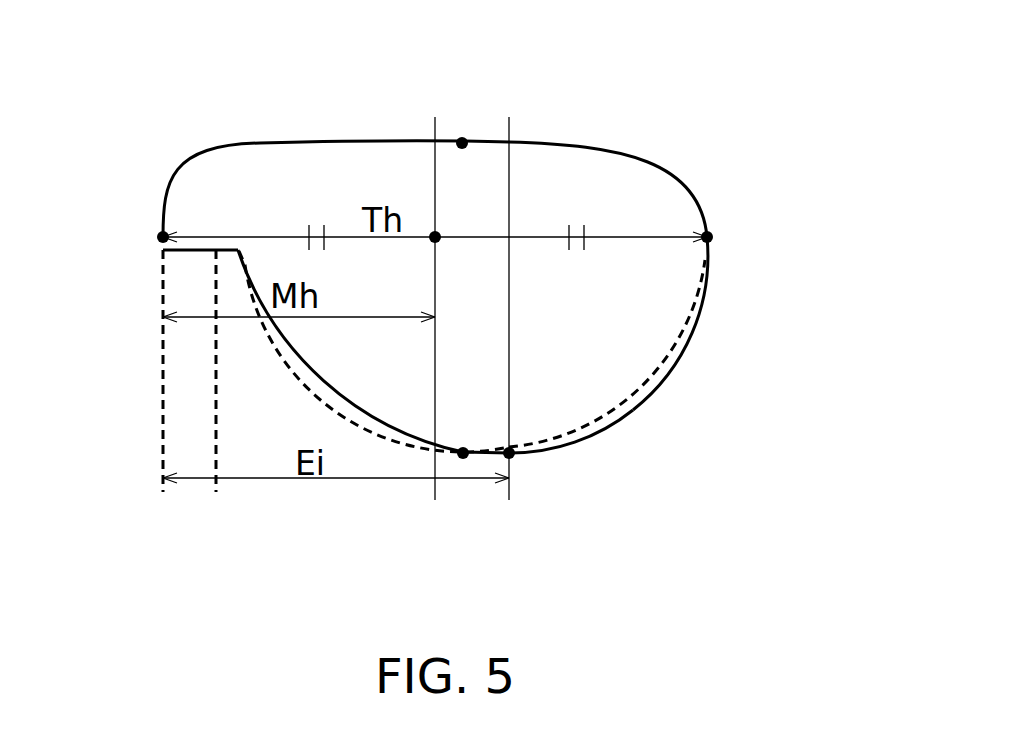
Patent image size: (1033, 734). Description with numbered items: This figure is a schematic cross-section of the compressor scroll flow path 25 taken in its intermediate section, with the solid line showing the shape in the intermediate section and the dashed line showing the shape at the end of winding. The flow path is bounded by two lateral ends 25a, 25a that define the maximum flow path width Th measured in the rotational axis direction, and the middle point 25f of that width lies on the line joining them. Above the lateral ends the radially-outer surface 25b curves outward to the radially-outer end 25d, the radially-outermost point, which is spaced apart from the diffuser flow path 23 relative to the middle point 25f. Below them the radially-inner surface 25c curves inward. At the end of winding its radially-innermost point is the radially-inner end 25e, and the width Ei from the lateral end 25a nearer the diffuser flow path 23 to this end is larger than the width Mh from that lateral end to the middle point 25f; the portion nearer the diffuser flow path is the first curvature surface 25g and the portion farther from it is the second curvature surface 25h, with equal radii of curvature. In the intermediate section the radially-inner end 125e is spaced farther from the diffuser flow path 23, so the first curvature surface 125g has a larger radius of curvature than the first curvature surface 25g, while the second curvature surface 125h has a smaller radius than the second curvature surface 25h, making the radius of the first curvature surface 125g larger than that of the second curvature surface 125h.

The diffuser flow path 23 is at (166, 372).
The compressor scroll flow path 25 is at (435, 261).
The lateral ends 25a is at (163, 237).
The radially-outer surface 25b is at (575, 148).
The radially-inner surface 25c is at (618, 415).
The radially-outer end 25d is at (462, 143).
The radially-inner end 25e is at (463, 453).
The middle point 25f is at (435, 237).
The first curvature surface 25g is at (280, 348).
The second curvature surface 25h is at (684, 322).
The radially-inner end 125e is at (509, 453).
The first curvature surface 125g is at (330, 368).
The second curvature surface 125h is at (657, 376).